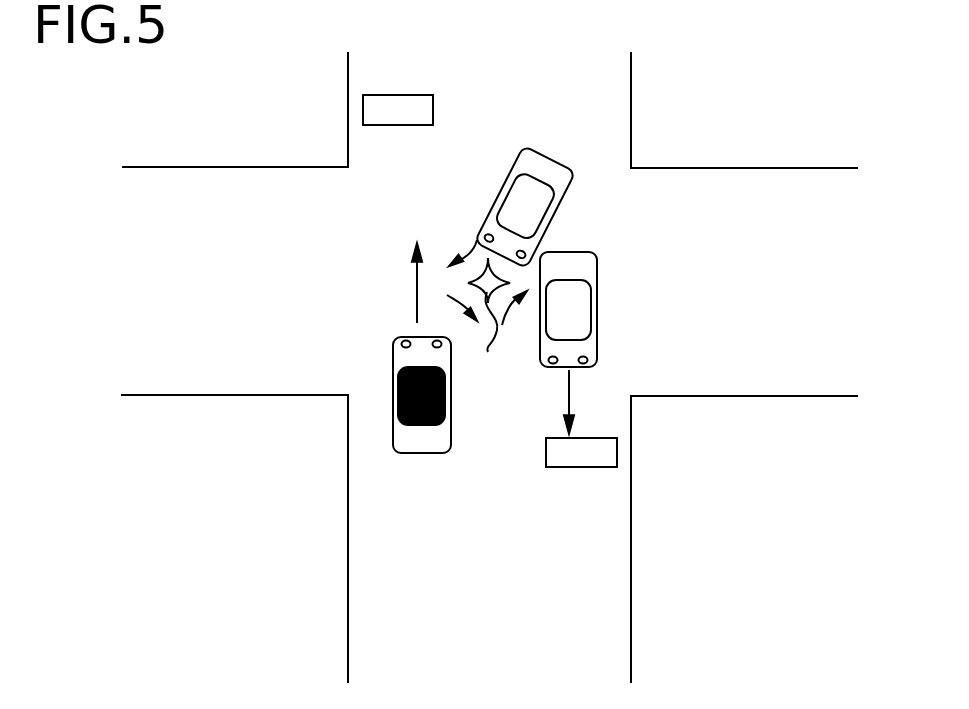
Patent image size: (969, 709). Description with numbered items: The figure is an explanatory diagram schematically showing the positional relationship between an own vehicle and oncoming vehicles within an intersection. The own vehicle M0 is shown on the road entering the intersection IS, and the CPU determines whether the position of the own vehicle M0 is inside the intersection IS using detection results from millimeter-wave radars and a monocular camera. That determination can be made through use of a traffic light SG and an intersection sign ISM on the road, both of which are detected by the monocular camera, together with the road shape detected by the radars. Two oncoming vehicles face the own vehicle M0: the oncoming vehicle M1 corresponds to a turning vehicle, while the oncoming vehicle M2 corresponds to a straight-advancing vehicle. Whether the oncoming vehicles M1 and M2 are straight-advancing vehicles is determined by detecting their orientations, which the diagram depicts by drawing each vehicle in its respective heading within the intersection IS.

The intersection IS is at (388, 234).
The traffic light SG is at (490, 281).
The own vehicle M0 is at (427, 443).
The oncoming vehicle M1 is at (540, 162).
The oncoming vehicle M2 is at (588, 273).
The intersection sign ISM is at (487, 307).